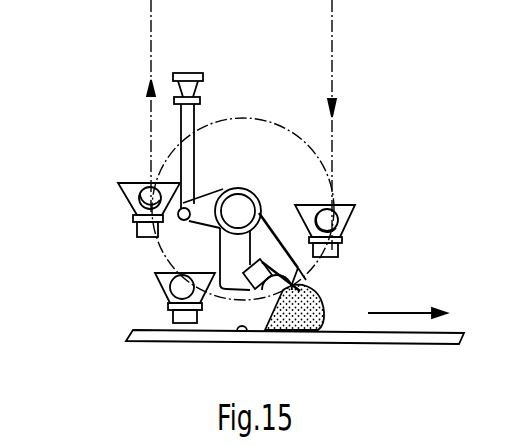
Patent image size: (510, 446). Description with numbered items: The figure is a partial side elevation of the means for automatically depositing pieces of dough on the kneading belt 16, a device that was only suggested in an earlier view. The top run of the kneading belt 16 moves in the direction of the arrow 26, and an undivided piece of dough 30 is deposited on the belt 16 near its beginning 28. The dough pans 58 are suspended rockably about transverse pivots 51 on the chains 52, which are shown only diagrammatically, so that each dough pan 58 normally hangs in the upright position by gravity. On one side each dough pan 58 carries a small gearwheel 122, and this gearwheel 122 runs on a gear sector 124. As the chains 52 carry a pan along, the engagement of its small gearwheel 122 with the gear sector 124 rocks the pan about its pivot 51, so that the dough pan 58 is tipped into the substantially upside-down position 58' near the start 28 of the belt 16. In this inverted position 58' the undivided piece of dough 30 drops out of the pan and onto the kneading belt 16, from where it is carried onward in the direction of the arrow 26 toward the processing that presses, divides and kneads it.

The kneading belt 16 is at (409, 339).
The arrow 26 is at (400, 312).
The beginning of the kneading belt 28 is at (243, 337).
The undivided piece of dough 30 is at (321, 333).
The transverse pivots 51 is at (138, 183).
The chains 52 is at (151, 40).
The dough pan 58 is at (193, 181).
The upside-down position of dough pan 58' is at (235, 326).
The small gearwheel 122 is at (135, 202).
The gear sector 124 is at (296, 280).